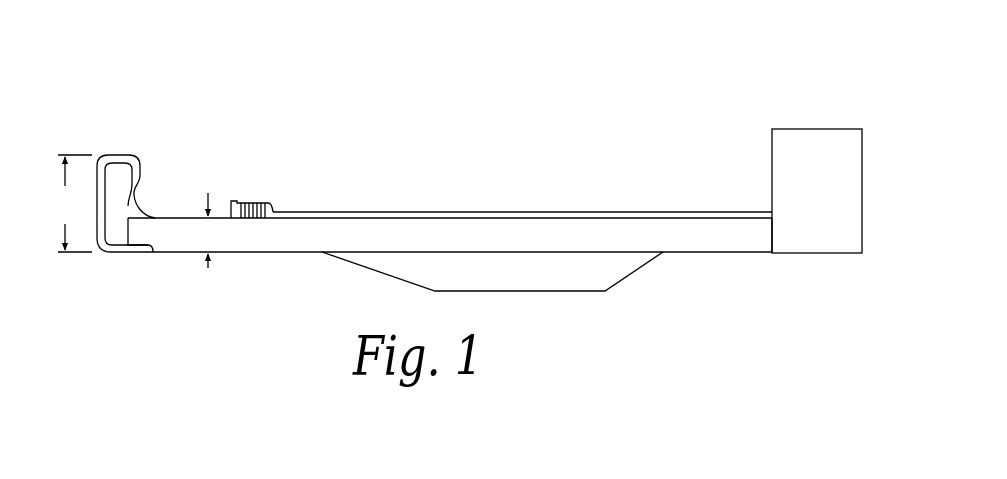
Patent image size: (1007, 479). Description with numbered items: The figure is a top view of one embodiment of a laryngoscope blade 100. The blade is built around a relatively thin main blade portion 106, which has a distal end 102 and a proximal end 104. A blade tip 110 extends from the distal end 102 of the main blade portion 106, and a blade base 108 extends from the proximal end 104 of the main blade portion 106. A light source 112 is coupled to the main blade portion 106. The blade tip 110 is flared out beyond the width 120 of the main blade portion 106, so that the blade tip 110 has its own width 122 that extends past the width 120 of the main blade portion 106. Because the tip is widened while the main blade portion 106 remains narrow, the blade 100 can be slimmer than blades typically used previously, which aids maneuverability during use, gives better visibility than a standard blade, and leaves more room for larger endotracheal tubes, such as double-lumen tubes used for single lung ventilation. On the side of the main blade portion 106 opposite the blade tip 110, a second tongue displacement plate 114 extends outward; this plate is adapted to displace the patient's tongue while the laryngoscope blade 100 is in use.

The laryngoscope blade 100 is at (197, 107).
The distal end 102 is at (168, 247).
The proximal end 104 is at (770, 235).
The main blade portion 106 is at (518, 227).
The blade base 108 is at (793, 140).
The blade tip 110 is at (130, 203).
The light source 112 is at (257, 202).
The second tongue displacement plate 114 is at (567, 278).
The width of the main blade portion 120 is at (210, 230).
The width of the blade tip 122 is at (69, 203).